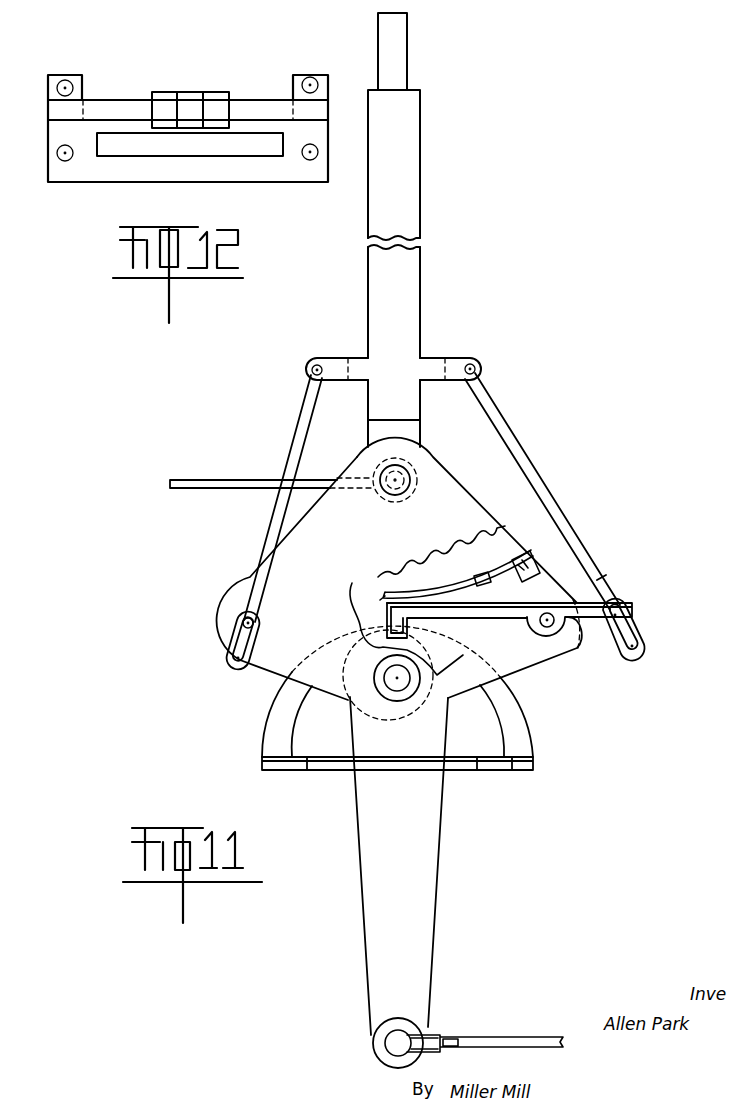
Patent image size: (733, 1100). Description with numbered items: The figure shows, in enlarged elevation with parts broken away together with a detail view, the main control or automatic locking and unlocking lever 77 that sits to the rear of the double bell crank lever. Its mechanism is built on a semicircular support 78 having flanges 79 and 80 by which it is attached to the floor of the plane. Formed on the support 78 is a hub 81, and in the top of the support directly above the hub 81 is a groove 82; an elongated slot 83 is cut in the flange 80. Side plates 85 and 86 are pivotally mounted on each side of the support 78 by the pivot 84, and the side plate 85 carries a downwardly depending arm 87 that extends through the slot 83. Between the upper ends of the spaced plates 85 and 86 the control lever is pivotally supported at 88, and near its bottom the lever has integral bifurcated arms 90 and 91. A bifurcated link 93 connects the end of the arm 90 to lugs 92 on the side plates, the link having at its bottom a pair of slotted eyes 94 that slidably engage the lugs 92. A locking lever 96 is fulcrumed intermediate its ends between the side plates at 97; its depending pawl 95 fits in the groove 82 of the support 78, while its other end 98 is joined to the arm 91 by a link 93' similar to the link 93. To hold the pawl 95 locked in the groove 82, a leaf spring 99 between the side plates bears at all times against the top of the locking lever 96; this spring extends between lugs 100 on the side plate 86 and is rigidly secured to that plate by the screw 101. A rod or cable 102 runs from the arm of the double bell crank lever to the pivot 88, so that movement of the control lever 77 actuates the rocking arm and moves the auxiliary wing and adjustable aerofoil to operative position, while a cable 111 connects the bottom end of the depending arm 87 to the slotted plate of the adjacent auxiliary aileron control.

In FIG. 11, the main control lever 77 is at (420, 90).
In FIG. 12, the semicircular support 78 is at (250, 108).
In FIG. 11, the semicircular support 78 is at (510, 720).
In FIG. 12, the flange 79 is at (80, 80).
In FIG. 12, the flange 80 is at (95, 170).
In FIG. 11, the flange 80 is at (522, 767).
In FIG. 12, the hub 81 is at (163, 95).
In FIG. 11, the hub 81 is at (357, 630).
In FIG. 12, the groove 82 is at (190, 110).
In FIG. 11, the groove 82 is at (360, 617).
In FIG. 12, the elongated slot 83 is at (250, 147).
In FIG. 11, the elongated slot 83 is at (470, 772).
In FIG. 11, the pivot 84 is at (400, 680).
In FIG. 11, the side plate 85 is at (310, 537).
In FIG. 11, the side plate 86 is at (490, 543).
In FIG. 11, the depending arm 87 is at (363, 798).
In FIG. 11, the pivot 88 is at (395, 480).
In FIG. 11, the bifurcated arm 90 is at (357, 367).
In FIG. 11, the bifurcated arm 91 is at (433, 367).
In FIG. 11, the lug 92 is at (240, 625).
In FIG. 11, the bifurcated link 93 is at (281, 498).
In FIG. 11, the link 93' is at (542, 491).
In FIG. 11, the slotted eye 94 is at (230, 658).
In FIG. 11, the depending pawl 95 is at (367, 588).
In FIG. 11, the locking lever 96 is at (493, 610).
In FIG. 11, the fulcrum 97 is at (567, 625).
In FIG. 11, the other end 98 is at (637, 607).
In FIG. 11, the leaf spring 99 is at (417, 593).
In FIG. 11, the lug 100 is at (480, 577).
In FIG. 11, the screw 101 is at (520, 558).
In FIG. 11, the rod or cable 102 is at (195, 478).
In FIG. 11, the cable 111 is at (488, 1040).